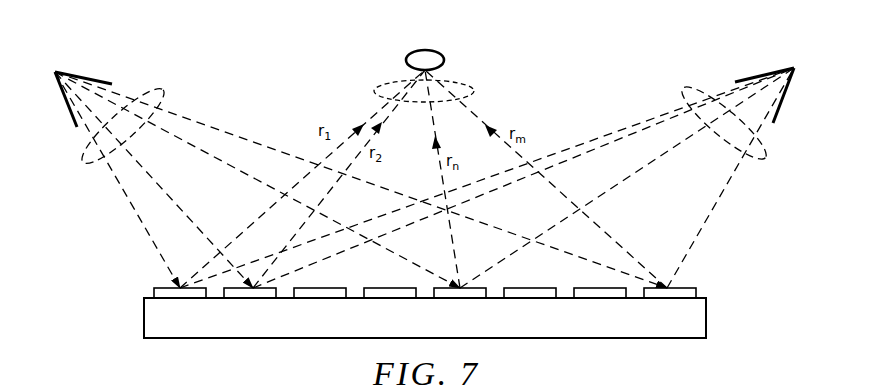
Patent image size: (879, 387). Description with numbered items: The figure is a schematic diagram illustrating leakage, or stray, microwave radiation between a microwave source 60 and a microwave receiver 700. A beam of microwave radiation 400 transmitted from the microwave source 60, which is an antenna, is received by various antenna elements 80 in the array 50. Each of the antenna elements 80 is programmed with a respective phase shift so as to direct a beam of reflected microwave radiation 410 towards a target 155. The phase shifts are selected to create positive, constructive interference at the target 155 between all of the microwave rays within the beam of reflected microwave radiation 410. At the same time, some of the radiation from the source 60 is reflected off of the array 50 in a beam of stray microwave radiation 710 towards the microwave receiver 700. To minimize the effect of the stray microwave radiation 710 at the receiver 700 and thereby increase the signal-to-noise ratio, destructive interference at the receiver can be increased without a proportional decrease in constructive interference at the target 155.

The microwave source 60 is at (92, 80).
The beam of microwave radiation 400 is at (84, 164).
The target 155 is at (444, 60).
The beam of reflected microwave radiation 410 is at (476, 90).
The microwave receiver 700 is at (762, 75).
The beam of stray microwave radiation 710 is at (762, 156).
The antenna elements 80 is at (698, 290).
The array 50 is at (708, 314).